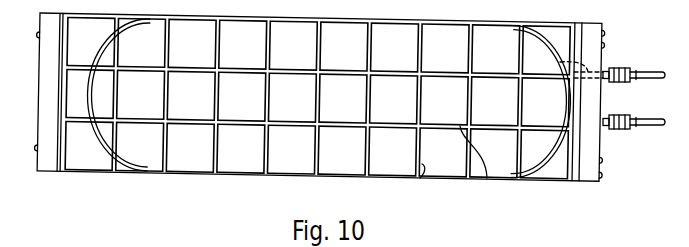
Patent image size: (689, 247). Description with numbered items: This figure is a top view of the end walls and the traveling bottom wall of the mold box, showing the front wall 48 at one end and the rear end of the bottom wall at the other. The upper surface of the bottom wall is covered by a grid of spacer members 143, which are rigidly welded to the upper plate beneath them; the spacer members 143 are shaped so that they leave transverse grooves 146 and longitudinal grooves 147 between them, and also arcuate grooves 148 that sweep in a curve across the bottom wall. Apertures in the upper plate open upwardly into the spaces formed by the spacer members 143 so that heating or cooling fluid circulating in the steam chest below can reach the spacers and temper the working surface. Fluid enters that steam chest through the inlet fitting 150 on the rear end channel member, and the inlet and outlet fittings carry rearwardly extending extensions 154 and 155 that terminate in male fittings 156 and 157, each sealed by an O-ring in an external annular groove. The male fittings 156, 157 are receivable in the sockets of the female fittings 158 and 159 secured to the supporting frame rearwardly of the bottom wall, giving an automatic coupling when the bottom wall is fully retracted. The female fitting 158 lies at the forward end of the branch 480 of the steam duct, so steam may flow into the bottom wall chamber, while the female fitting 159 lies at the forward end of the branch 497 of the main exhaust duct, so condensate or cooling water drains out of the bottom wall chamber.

The front wall 48 is at (40, 89).
The spacer members 143 is at (454, 164).
The transverse grooves 146 is at (420, 178).
The longitudinal grooves 147 is at (487, 178).
The arcuate grooves 148 is at (107, 141).
The inlet fitting 150 is at (560, 62).
The rearwardly extending extension 154 is at (605, 71).
The rearwardly extending extension 155 is at (603, 127).
The male fitting 156 is at (612, 68).
The male fitting 157 is at (612, 130).
The female fitting 158 is at (630, 68).
The female fitting 159 is at (634, 128).
The branch 480 is at (648, 79).
The branch 497 is at (657, 119).